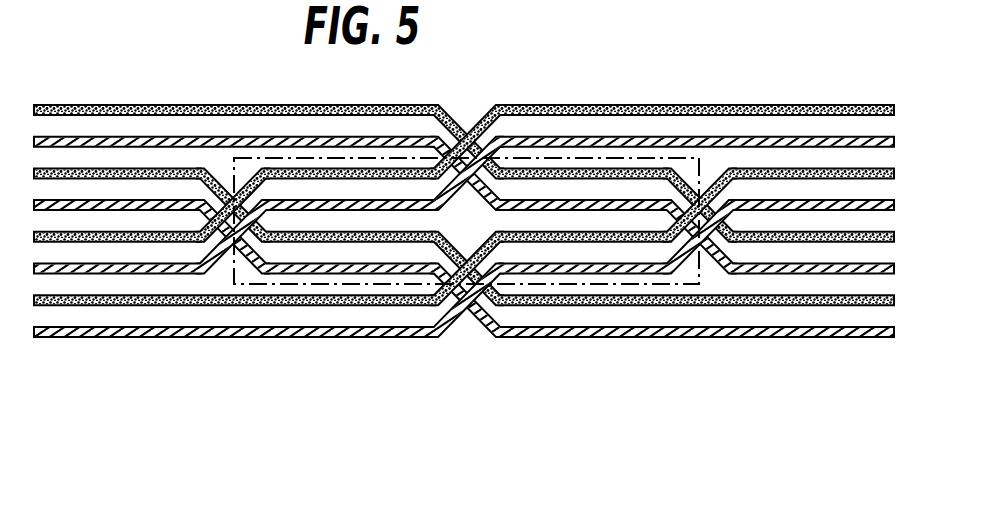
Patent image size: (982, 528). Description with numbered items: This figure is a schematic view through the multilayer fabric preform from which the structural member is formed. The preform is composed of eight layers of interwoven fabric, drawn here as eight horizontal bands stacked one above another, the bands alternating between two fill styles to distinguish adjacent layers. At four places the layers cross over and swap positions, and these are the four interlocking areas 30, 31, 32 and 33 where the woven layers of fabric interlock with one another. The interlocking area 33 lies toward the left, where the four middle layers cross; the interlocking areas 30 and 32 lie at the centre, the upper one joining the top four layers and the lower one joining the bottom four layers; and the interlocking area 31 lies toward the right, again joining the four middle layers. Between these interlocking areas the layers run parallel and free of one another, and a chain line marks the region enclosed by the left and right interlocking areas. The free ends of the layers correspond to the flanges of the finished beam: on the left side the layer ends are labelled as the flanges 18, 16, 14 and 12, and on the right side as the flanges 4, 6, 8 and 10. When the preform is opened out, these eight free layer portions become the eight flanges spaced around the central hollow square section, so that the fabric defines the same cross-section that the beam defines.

The flange 4 is at (737, 105).
The flange 6 is at (838, 172).
The flange 8 is at (837, 243).
The flange 10 is at (645, 338).
The flange 12 is at (327, 338).
The flange 14 is at (77, 242).
The flange 16 is at (88, 168).
The flange 18 is at (190, 105).
The interlocking area 30 is at (455, 155).
The interlocking area 31 is at (712, 256).
The interlocking area 32 is at (473, 288).
The interlocking area 33 is at (232, 218).